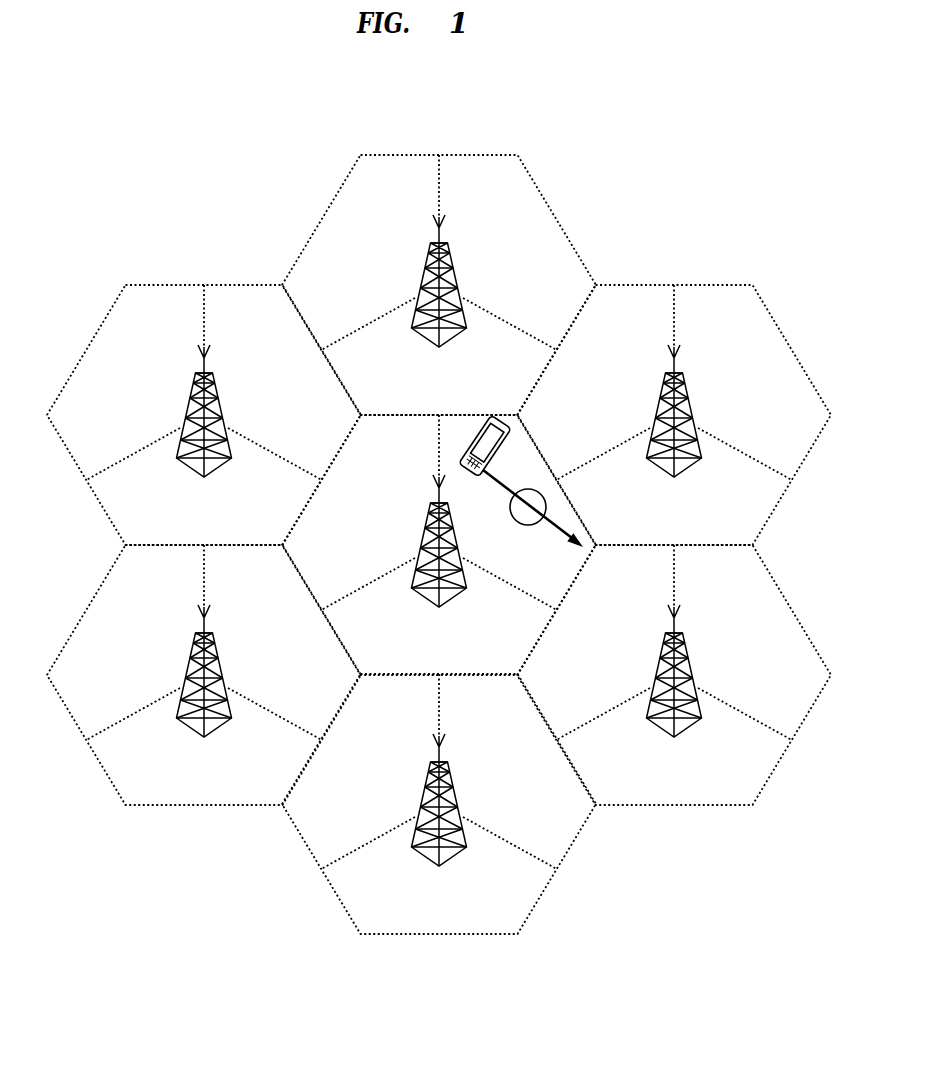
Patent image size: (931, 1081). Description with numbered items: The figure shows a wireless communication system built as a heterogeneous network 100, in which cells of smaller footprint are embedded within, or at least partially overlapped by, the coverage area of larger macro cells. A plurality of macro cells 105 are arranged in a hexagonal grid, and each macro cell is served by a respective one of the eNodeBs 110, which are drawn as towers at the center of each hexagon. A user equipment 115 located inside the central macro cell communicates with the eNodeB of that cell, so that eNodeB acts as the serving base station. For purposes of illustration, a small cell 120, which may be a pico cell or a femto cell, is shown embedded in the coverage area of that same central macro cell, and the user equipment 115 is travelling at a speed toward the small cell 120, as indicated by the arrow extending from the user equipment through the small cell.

The heterogeneous network 100 is at (740, 162).
The macro cells 105 is at (439, 544).
The eNodeBs 110 is at (408, 540).
The user equipment 115 is at (513, 428).
The small cell 120 is at (526, 525).